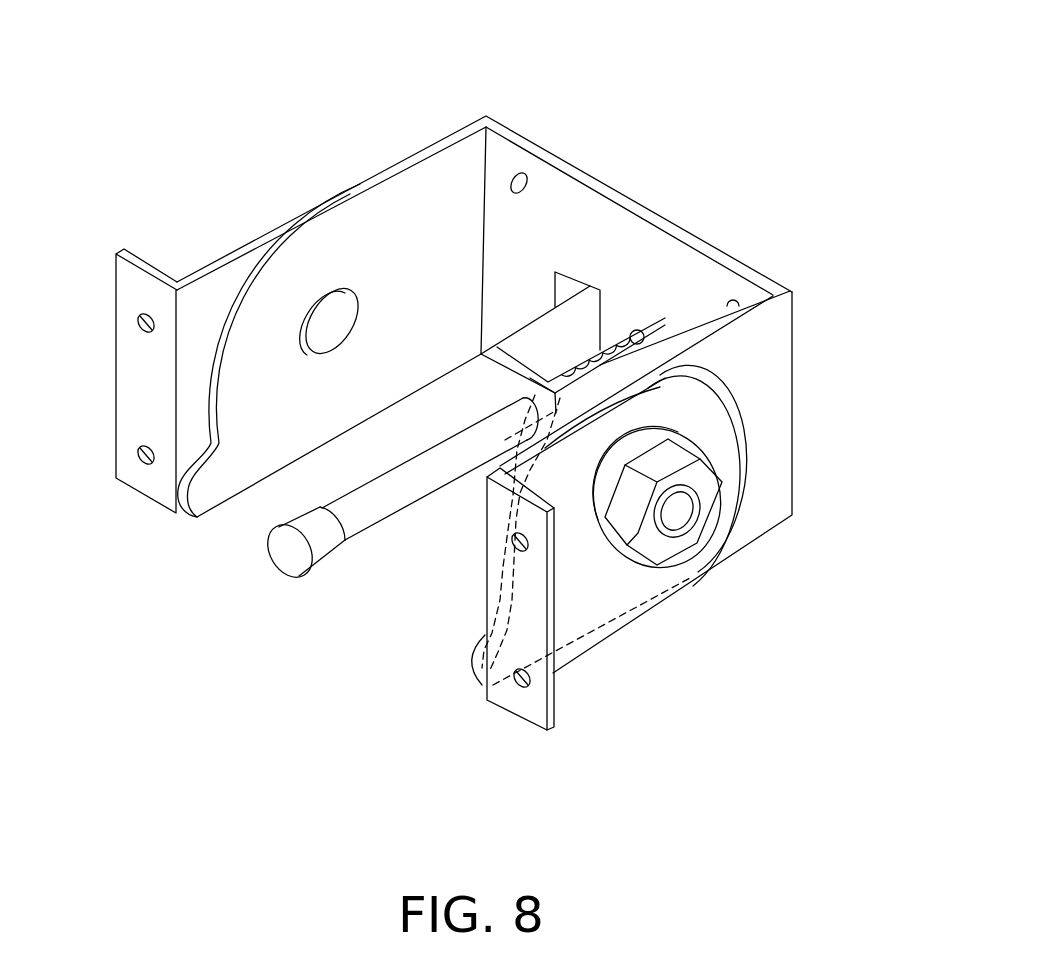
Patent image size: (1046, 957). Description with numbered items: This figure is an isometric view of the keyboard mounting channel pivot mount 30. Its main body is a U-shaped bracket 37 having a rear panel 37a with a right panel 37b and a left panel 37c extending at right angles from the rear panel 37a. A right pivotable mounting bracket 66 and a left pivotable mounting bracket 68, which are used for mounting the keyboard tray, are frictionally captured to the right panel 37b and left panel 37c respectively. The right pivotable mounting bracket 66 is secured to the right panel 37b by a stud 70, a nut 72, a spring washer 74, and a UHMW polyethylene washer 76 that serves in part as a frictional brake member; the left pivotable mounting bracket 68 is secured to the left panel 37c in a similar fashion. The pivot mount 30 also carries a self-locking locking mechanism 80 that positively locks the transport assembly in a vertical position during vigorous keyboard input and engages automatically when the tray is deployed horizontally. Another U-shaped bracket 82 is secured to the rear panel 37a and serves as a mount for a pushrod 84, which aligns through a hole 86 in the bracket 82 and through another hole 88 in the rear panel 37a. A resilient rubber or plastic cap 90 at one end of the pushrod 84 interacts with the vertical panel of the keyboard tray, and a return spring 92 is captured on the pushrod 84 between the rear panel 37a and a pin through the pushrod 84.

The pivot mount 30 is at (682, 128).
The U-shaped bracket 37 is at (650, 207).
The rear panel 37a is at (537, 172).
The right panel 37b is at (770, 375).
The left panel 37c is at (430, 178).
The right pivotable mounting bracket 66 is at (508, 700).
The left pivotable mounting bracket 68 is at (142, 396).
The stud 70 is at (680, 512).
The nut 72 is at (700, 520).
The spring washer 74 is at (710, 457).
The UHMW polyethylene washer 76 is at (638, 385).
The locking mechanism 80 is at (373, 537).
The U-shaped bracket 82 is at (581, 240).
The pushrod 84 is at (422, 477).
The hole 86 is at (525, 420).
The hole 88 is at (712, 308).
The resilient cap 90 is at (325, 553).
The return spring 92 is at (610, 338).